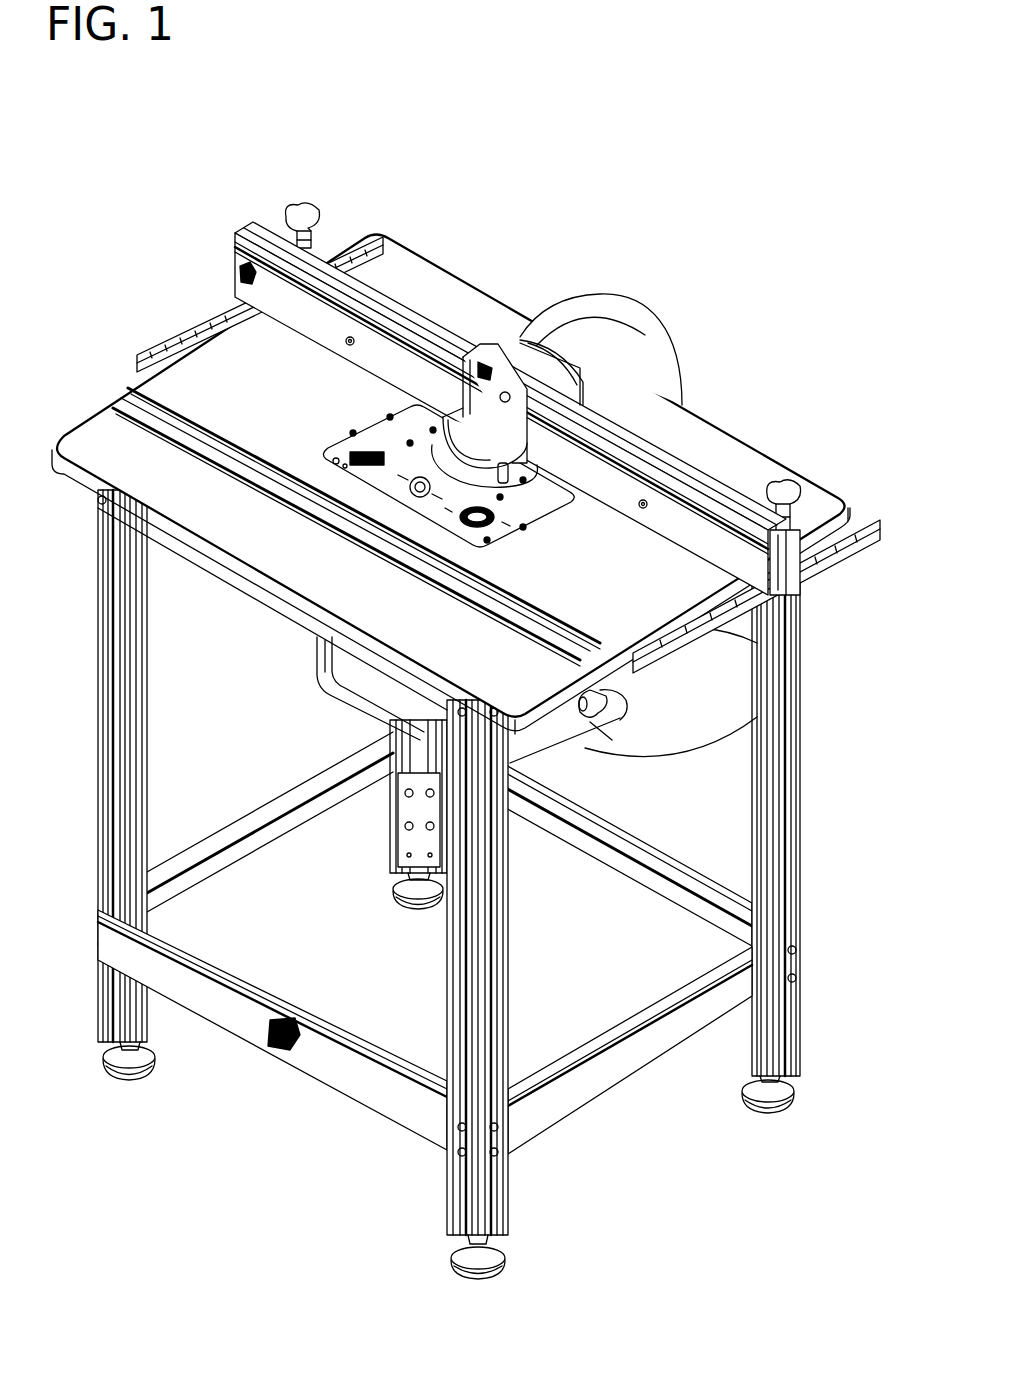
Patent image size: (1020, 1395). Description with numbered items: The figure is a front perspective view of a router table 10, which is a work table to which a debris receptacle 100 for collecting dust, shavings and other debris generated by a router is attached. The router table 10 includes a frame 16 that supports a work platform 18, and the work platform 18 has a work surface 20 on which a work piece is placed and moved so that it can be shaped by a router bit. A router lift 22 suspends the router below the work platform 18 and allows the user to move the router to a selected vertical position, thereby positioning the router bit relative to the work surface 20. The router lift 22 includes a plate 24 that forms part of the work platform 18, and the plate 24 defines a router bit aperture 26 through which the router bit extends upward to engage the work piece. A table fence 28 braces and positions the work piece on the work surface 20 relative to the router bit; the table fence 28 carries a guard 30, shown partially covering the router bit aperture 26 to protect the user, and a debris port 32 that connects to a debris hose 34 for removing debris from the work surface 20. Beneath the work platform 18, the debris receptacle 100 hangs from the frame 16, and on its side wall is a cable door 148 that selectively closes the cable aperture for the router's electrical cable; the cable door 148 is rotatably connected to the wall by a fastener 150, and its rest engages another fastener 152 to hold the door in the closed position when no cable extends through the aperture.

The router table 10 is at (816, 388).
The frame 16 is at (820, 802).
The work platform 18 is at (435, 243).
The work surface 20 is at (92, 440).
The router lift 22 is at (320, 428).
The plate 24 is at (540, 507).
The router bit aperture 26 is at (428, 500).
The table fence 28 is at (228, 210).
The guard 30 is at (500, 335).
The debris port 32 is at (537, 340).
The debris hose 34 is at (662, 293).
The debris receptacle 100 is at (295, 690).
The cable door 148 is at (588, 702).
The fastener 150 is at (615, 720).
The fastener 152 is at (612, 699).